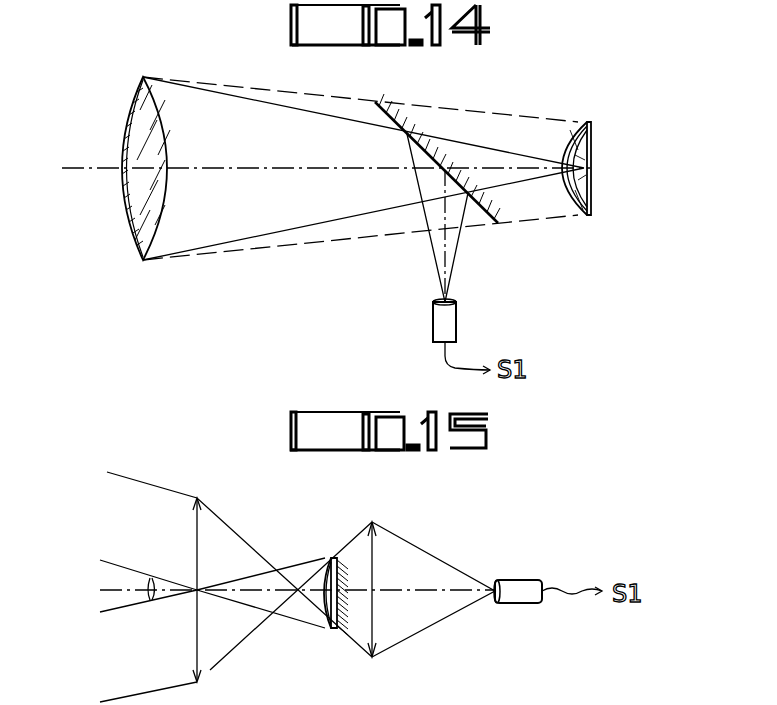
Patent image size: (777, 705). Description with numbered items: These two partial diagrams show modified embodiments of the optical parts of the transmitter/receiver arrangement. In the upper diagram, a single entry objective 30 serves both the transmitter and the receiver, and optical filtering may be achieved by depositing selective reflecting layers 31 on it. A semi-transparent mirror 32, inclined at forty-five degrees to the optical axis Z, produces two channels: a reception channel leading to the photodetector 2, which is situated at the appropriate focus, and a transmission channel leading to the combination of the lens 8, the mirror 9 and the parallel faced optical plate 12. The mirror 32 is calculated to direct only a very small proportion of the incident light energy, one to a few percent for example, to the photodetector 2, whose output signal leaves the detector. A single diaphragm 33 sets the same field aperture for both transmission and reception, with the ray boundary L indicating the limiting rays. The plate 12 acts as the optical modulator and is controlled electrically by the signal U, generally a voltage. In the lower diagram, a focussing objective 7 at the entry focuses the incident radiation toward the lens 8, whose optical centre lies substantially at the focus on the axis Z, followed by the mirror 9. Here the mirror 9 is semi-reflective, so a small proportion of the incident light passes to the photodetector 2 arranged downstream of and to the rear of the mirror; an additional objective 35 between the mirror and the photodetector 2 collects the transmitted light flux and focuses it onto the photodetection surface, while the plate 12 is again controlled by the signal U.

In FIG. 14, the photodetector 2 is at (452, 322).
In FIG. 15, the photodetector 2 is at (520, 580).
In FIG. 15, the focussing objective 7 is at (196, 542).
In FIG. 14, the lens 8 is at (591, 150).
In FIG. 15, the lens 8 is at (326, 562).
In FIG. 14, the mirror 9 is at (591, 206).
In FIG. 15, the mirror 9 is at (334, 580).
In FIG. 14, the parallel faced optical plate 12 is at (580, 122).
In FIG. 15, the parallel faced optical plate 12 is at (326, 622).
In FIG. 14, the single entry objective 30 is at (157, 134).
In FIG. 14, the selective reflecting layers 31 is at (125, 205).
In FIG. 14, the semi-transparent mirror 32 is at (393, 118).
In FIG. 14, the single diaphragm 33 is at (356, 238).
In FIG. 15, the additional objective 35 is at (372, 626).
In FIG. 14, the ray boundary L is at (360, 95).
In FIG. 14, the signal U is at (598, 224).
In FIG. 15, the signal U is at (335, 632).
In FIG. 14, the optical axis Z is at (200, 168).
In FIG. 15, the optical axis Z is at (432, 570).